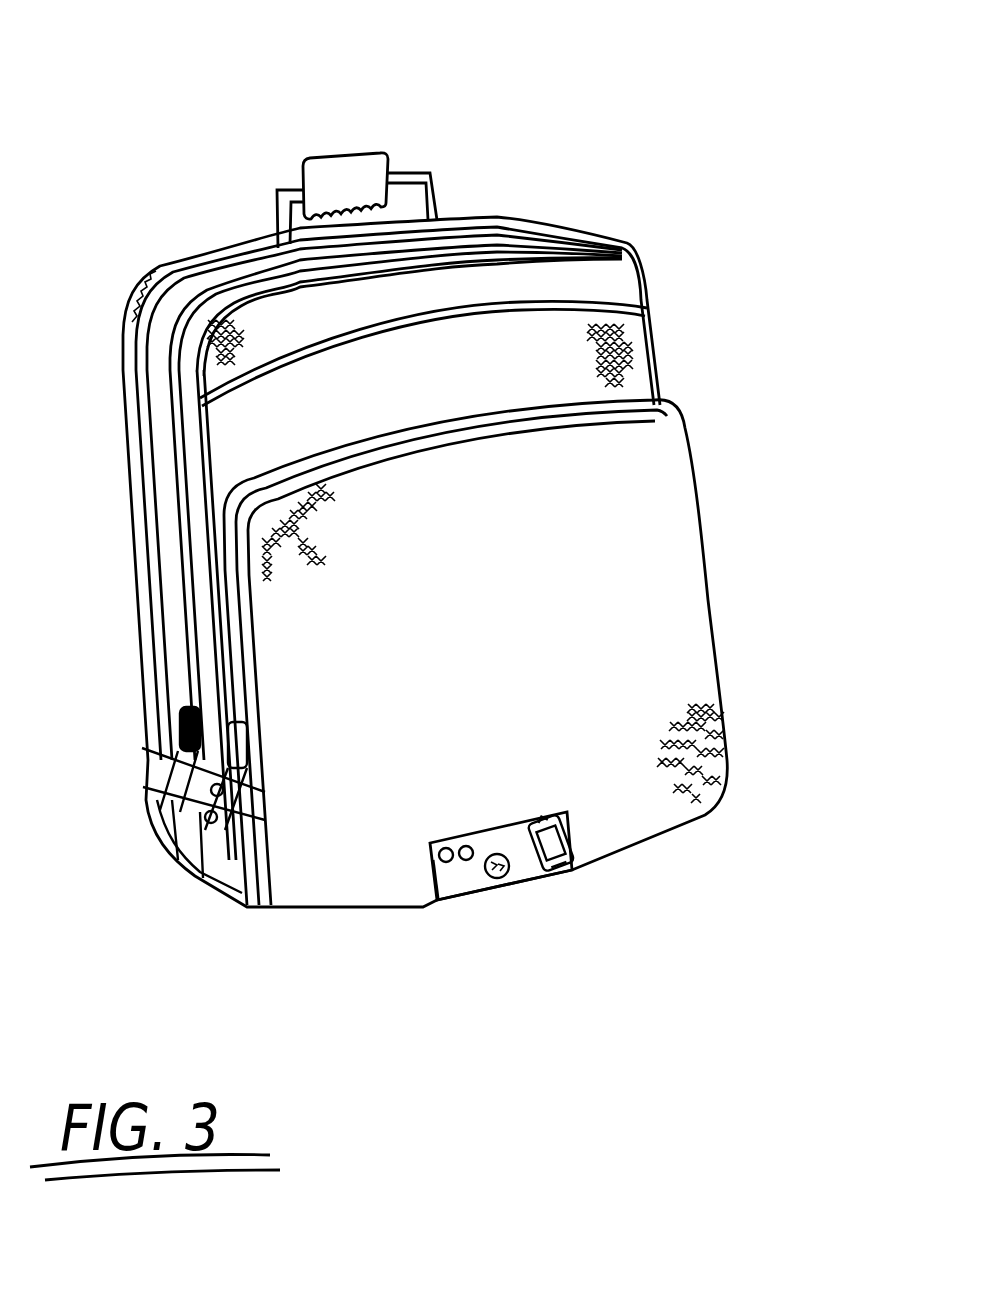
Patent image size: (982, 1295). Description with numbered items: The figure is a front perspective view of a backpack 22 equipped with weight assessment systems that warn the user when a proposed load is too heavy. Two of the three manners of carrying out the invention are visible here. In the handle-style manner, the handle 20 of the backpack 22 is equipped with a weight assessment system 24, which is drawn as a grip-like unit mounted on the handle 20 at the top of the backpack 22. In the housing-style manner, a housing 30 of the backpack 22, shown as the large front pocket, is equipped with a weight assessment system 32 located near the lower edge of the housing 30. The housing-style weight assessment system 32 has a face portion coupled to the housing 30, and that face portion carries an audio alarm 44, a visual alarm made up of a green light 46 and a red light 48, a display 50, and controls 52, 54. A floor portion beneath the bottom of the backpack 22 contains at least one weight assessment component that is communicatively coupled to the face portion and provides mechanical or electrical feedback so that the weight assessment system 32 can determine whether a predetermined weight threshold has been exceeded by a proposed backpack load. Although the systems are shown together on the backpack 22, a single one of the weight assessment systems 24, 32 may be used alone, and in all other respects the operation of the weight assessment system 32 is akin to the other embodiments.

The handle 20 is at (430, 172).
The backpack 22 is at (557, 207).
The weight assessment system 24 is at (355, 153).
The housing 30 is at (620, 578).
The weight assessment system 32 is at (526, 804).
The audio alarm 44 is at (508, 876).
The green light 46 is at (444, 850).
The red light 48 is at (467, 847).
The display 50 is at (567, 833).
The control 52 is at (545, 817).
The control 54 is at (568, 867).